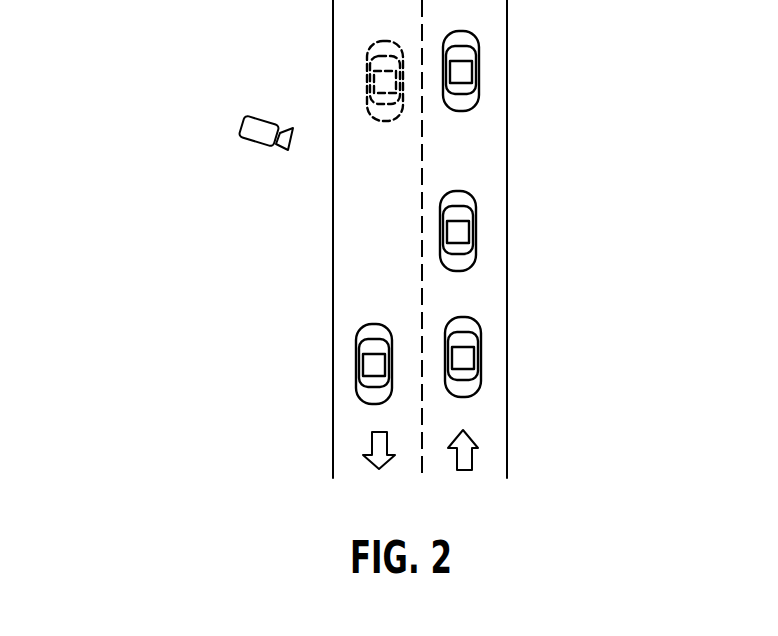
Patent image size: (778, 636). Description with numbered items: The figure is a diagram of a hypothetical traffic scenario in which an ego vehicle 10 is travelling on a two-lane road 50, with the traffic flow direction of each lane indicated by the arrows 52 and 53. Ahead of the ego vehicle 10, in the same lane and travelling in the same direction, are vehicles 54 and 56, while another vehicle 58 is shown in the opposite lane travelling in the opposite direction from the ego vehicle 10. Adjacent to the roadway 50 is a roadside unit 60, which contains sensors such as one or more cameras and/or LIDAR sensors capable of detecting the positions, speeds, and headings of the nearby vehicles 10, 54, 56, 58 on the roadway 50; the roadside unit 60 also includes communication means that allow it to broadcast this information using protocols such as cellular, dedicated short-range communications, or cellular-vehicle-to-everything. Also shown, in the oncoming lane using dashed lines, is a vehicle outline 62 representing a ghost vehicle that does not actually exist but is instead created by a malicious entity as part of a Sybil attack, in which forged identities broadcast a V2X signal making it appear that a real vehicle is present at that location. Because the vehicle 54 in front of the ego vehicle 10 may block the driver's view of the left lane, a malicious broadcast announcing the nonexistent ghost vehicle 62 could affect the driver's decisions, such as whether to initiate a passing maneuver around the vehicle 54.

The vehicle 10 is at (483, 355).
The two-lane road 50 is at (490, 153).
The arrow 52 is at (475, 460).
The arrow 53 is at (367, 442).
The vehicle 54 is at (478, 235).
The vehicle 56 is at (480, 77).
The vehicle 58 is at (354, 352).
The roadside unit 60 is at (235, 127).
The vehicle outline 62 is at (365, 77).